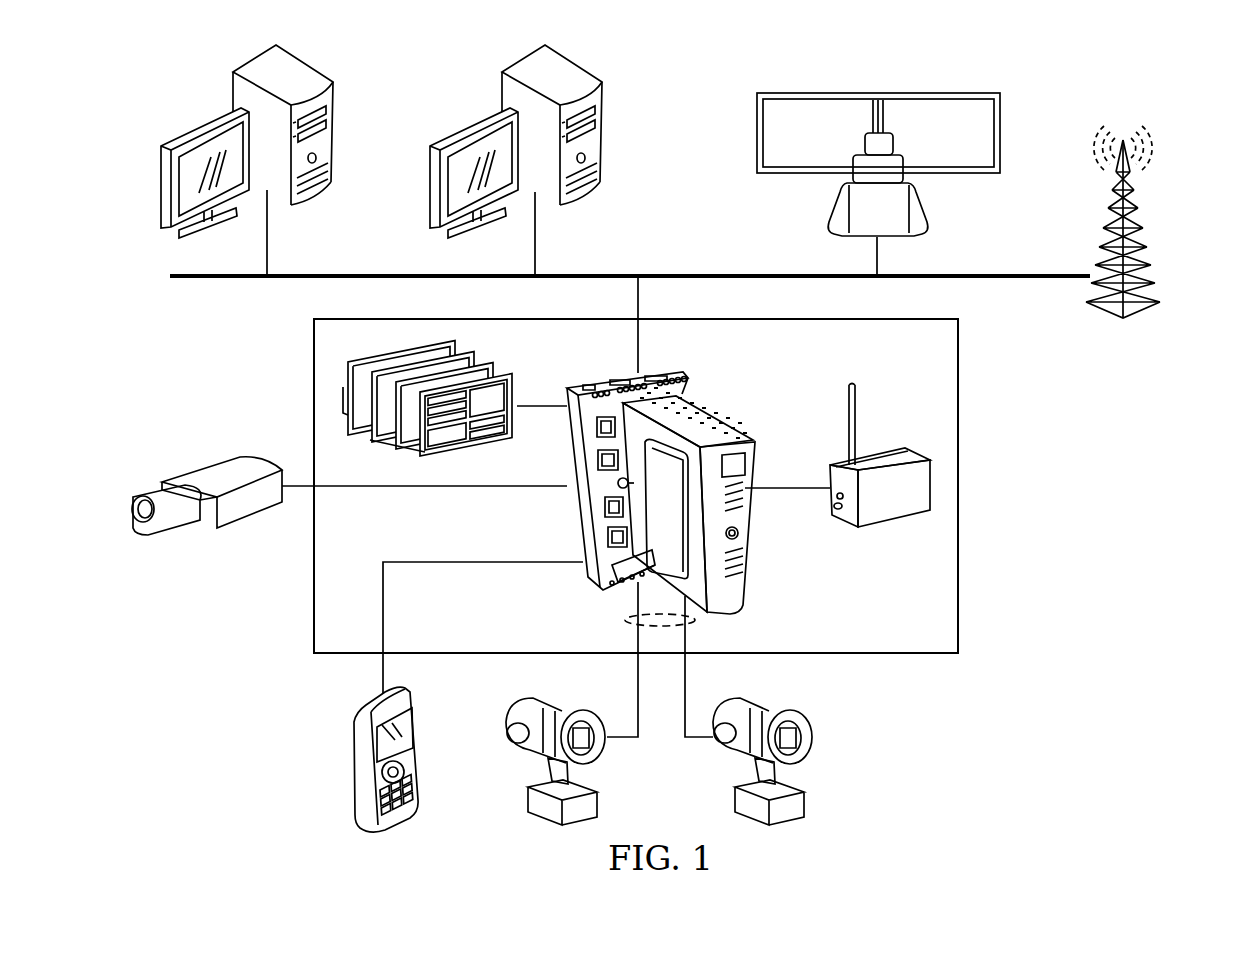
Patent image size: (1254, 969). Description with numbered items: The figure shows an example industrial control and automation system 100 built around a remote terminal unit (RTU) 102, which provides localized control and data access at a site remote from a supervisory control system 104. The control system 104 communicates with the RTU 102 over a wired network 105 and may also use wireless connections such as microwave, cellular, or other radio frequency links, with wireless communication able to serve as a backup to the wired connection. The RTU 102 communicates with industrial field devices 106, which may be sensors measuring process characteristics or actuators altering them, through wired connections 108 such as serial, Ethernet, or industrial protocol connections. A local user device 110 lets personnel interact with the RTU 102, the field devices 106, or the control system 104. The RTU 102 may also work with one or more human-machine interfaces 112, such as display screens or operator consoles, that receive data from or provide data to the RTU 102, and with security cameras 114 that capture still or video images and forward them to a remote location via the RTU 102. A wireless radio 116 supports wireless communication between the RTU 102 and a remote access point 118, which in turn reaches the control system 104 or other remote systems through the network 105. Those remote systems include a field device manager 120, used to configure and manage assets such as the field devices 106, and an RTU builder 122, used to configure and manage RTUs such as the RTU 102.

The industrial control and automation system 100 is at (1103, 612).
The remote terminal unit 102 is at (584, 523).
The control system 104 is at (912, 93).
The wired network 105 is at (710, 274).
The industrial field devices 106 is at (495, 806).
The wired connections 108 is at (625, 620).
The local user device 110 is at (353, 766).
The human-machine interfaces 112 is at (536, 362).
The security cameras 114 is at (213, 468).
The wireless radio 116 is at (898, 510).
The remote access point 118 is at (1143, 228).
The field device manager 120 is at (193, 86).
The RTU builder 122 is at (461, 86).